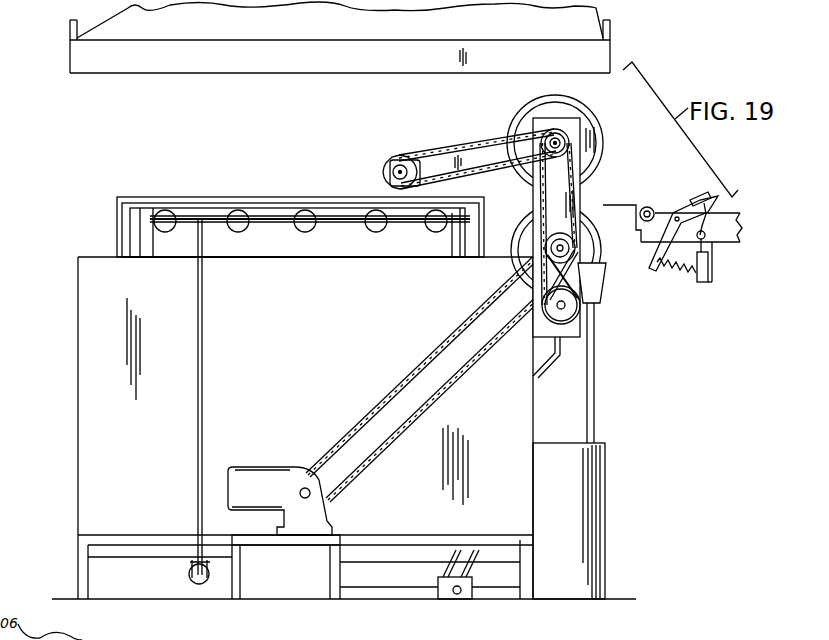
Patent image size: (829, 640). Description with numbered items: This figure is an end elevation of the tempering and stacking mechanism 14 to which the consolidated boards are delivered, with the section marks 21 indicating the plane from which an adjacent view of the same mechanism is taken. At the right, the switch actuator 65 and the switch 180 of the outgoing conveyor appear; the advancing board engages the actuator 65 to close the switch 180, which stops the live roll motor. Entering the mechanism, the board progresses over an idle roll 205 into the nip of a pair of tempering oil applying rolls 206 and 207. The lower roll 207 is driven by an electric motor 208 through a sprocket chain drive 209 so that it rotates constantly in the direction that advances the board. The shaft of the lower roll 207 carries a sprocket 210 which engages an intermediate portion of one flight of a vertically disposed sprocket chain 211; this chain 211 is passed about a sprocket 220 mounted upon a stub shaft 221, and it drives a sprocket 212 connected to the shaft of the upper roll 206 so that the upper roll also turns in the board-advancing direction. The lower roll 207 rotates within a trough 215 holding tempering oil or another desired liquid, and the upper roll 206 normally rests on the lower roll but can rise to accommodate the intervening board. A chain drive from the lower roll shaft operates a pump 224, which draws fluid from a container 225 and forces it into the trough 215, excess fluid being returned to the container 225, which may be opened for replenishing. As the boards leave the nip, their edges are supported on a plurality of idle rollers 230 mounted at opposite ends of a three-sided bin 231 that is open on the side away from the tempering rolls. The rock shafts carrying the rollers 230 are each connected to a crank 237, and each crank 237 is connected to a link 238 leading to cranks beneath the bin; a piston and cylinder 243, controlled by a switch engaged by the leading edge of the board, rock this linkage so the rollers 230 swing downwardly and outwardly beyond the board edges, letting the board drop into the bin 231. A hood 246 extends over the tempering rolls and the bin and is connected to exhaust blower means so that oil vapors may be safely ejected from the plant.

The tempering and stacking mechanism 14 is at (64, 260).
The section line 21- 21 is at (181, 132).
The switch actuator 65 is at (727, 220).
The switch 180 is at (700, 199).
The idle roll 205 is at (645, 208).
The upper tempering oil applying roll 206 is at (586, 140).
The lower tempering oil applying roll 207 is at (588, 250).
The electric motor 208 is at (258, 477).
The sprocket chain drive 209 is at (402, 375).
The sprocket 210 is at (574, 249).
The sprocket chain 211 is at (540, 205).
The sprocket 212 is at (547, 150).
The trough 215 is at (592, 292).
The sprocket 220 is at (558, 316).
The stub shaft 221 is at (566, 309).
The pump 224 is at (447, 596).
The container 225 is at (592, 510).
The idle rollers 230 is at (241, 232).
The bin 231 is at (90, 457).
The crank 237 is at (543, 373).
The link 238 is at (197, 411).
The cylinder 243 is at (187, 567).
The hood 246 is at (317, 62).